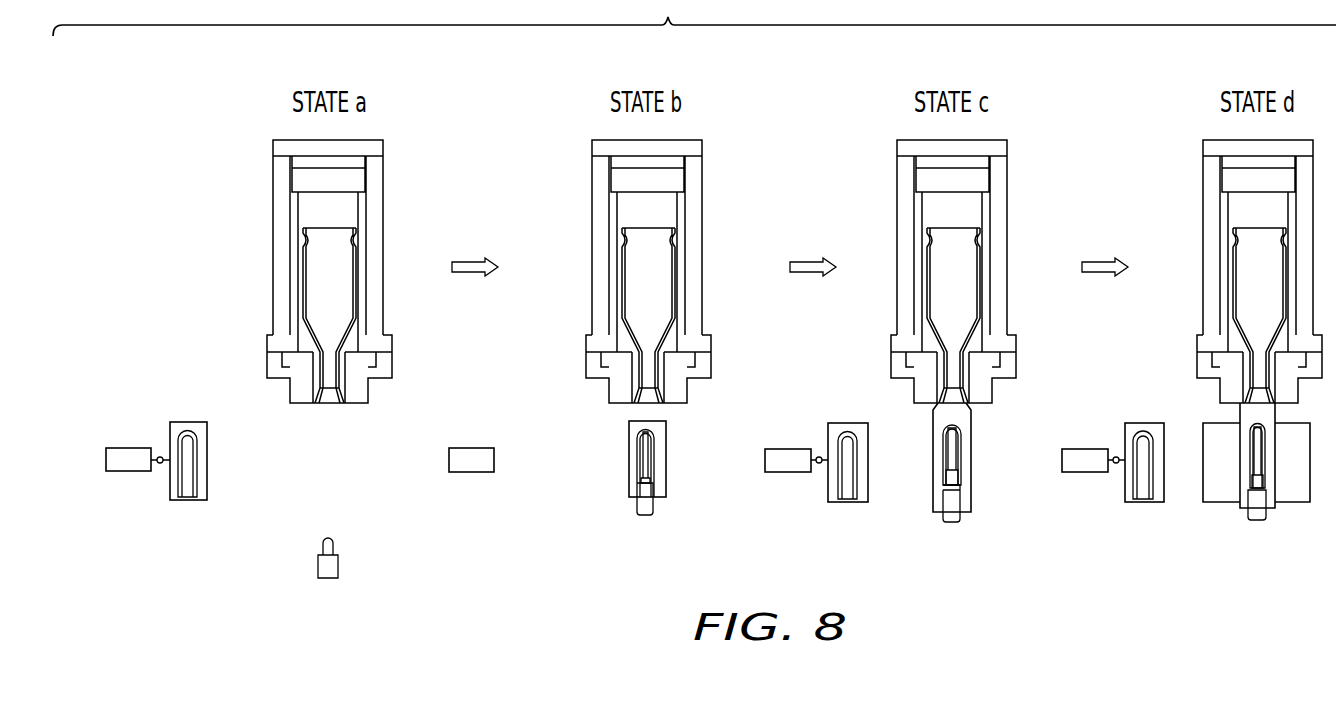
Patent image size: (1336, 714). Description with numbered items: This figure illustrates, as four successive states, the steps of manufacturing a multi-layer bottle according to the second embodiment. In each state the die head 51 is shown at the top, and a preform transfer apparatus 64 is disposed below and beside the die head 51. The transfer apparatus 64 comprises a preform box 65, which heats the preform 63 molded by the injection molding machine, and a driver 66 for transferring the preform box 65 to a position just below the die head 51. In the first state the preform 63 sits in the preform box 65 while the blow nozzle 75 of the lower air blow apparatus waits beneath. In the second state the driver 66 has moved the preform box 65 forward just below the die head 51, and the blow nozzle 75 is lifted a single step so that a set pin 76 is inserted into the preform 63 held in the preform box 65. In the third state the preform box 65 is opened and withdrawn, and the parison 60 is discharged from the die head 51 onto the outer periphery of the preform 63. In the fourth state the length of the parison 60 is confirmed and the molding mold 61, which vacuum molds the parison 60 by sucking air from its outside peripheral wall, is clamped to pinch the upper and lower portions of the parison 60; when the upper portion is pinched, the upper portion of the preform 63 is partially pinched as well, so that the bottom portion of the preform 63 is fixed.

The die head 51 is at (383, 198).
The parison 60 is at (971, 455).
The molding mold 61 is at (1223, 497).
The preform 63 is at (383, 477).
The preform transfer apparatus 64 is at (360, 453).
The preform box 65 is at (170, 485).
The driver 66 is at (125, 473).
The blow nozzle 75 is at (338, 567).
The needle 76 is at (652, 452).